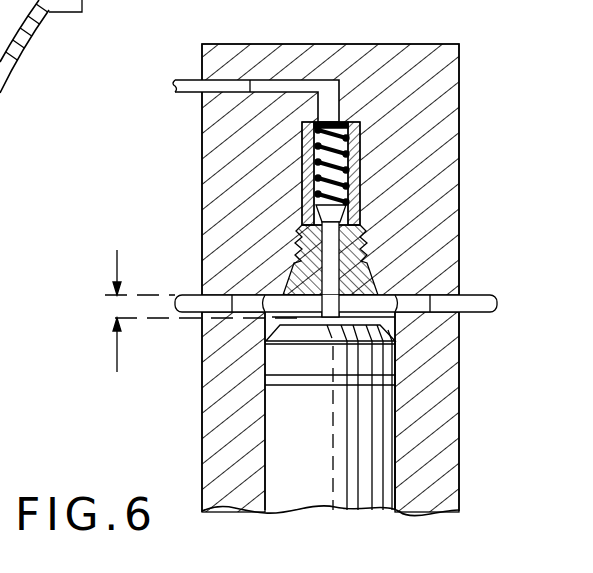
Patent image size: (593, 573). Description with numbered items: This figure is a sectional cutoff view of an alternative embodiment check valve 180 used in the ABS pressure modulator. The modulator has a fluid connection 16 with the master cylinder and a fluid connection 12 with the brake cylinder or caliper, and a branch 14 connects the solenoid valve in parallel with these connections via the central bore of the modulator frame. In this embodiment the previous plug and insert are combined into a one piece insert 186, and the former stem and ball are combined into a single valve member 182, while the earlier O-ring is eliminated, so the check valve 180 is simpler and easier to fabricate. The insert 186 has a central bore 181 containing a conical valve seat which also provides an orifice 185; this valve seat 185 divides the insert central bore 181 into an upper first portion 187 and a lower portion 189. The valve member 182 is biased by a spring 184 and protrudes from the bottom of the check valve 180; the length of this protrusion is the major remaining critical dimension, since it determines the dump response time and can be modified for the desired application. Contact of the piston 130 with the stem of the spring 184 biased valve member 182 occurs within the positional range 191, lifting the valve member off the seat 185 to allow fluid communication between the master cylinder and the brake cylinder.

The fluid connection 12 is at (487, 310).
The branch 14 is at (180, 309).
The fluid connection 16 is at (176, 79).
The piston 130 is at (265, 449).
The check valve 180 is at (370, 261).
The insert central bore 181 is at (312, 160).
The valve member 182 is at (360, 242).
The spring 184 is at (346, 130).
The conical valve seat 185 is at (305, 228).
The one piece insert 186 is at (342, 168).
The upper first portion 187 is at (312, 190).
The lower portion 189 is at (290, 258).
The positional range 191 is at (115, 308).